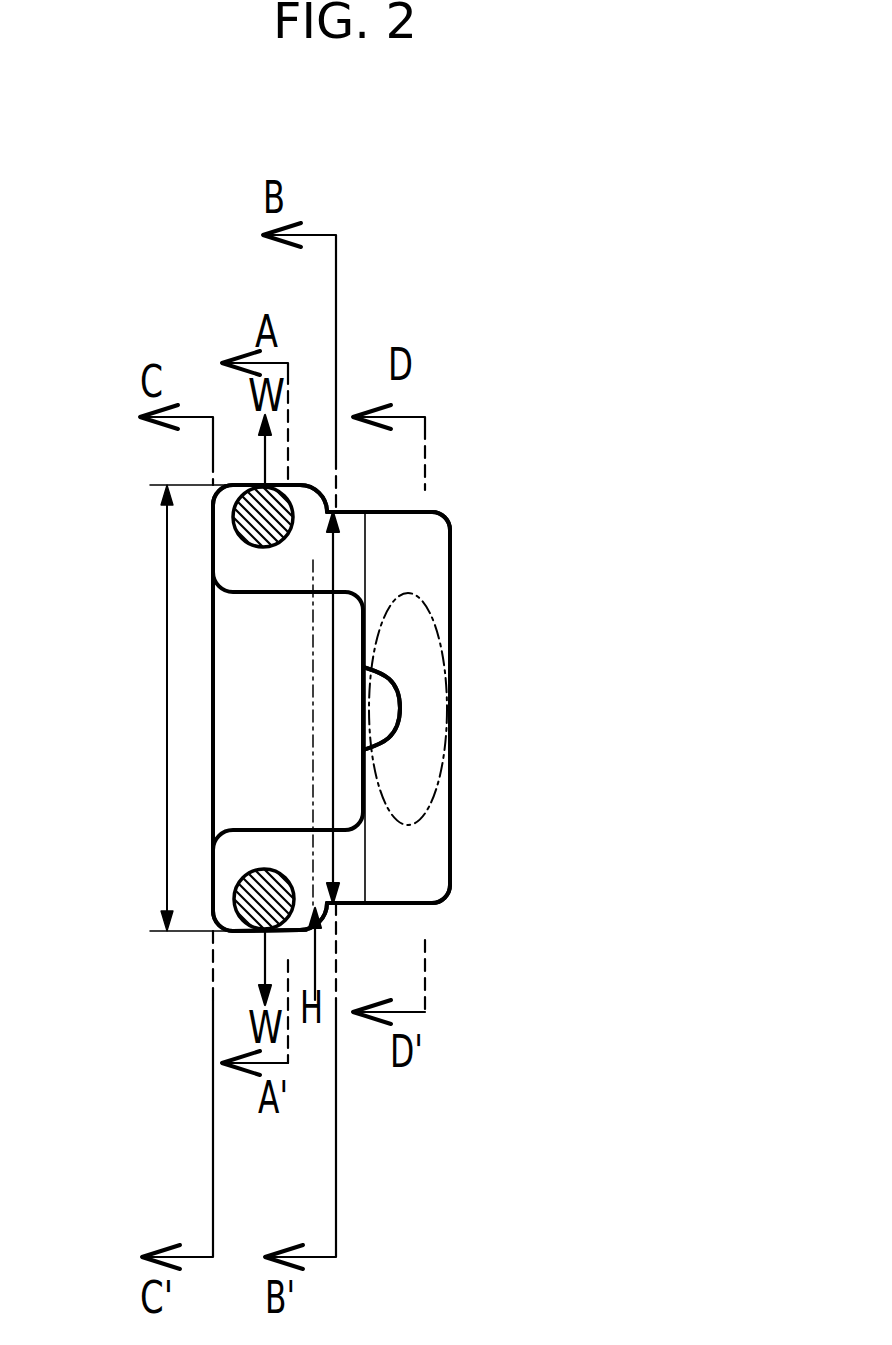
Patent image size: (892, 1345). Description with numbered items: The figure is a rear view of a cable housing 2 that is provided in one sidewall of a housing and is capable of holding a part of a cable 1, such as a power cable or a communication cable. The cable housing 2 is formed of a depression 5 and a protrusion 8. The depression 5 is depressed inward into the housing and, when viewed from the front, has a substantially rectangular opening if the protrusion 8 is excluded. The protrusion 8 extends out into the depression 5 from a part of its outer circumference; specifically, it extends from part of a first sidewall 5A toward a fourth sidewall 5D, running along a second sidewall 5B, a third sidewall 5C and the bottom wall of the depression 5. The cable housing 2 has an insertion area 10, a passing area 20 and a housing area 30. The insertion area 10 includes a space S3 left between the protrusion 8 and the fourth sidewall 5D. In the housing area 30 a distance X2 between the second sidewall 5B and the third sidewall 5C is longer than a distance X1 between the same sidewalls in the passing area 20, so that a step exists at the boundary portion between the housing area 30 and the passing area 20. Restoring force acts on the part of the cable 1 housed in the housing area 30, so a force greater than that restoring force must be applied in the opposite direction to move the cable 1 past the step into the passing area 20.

The cable housing 2 is at (558, 408).
The cable 1 is at (264, 547).
The depression 5 is at (428, 663).
The first sidewall 5A is at (213, 735).
The second sidewall 5B is at (240, 932).
The third sidewall 5C is at (240, 487).
The fourth sidewall 5D is at (450, 867).
The protrusion 8 is at (387, 708).
The insertion area 10 is at (427, 833).
The passing area 20 is at (317, 757).
The housing area 30 is at (247, 682).
The space S3 is at (432, 610).
The distance X1 is at (333, 550).
The distance X2 is at (167, 593).